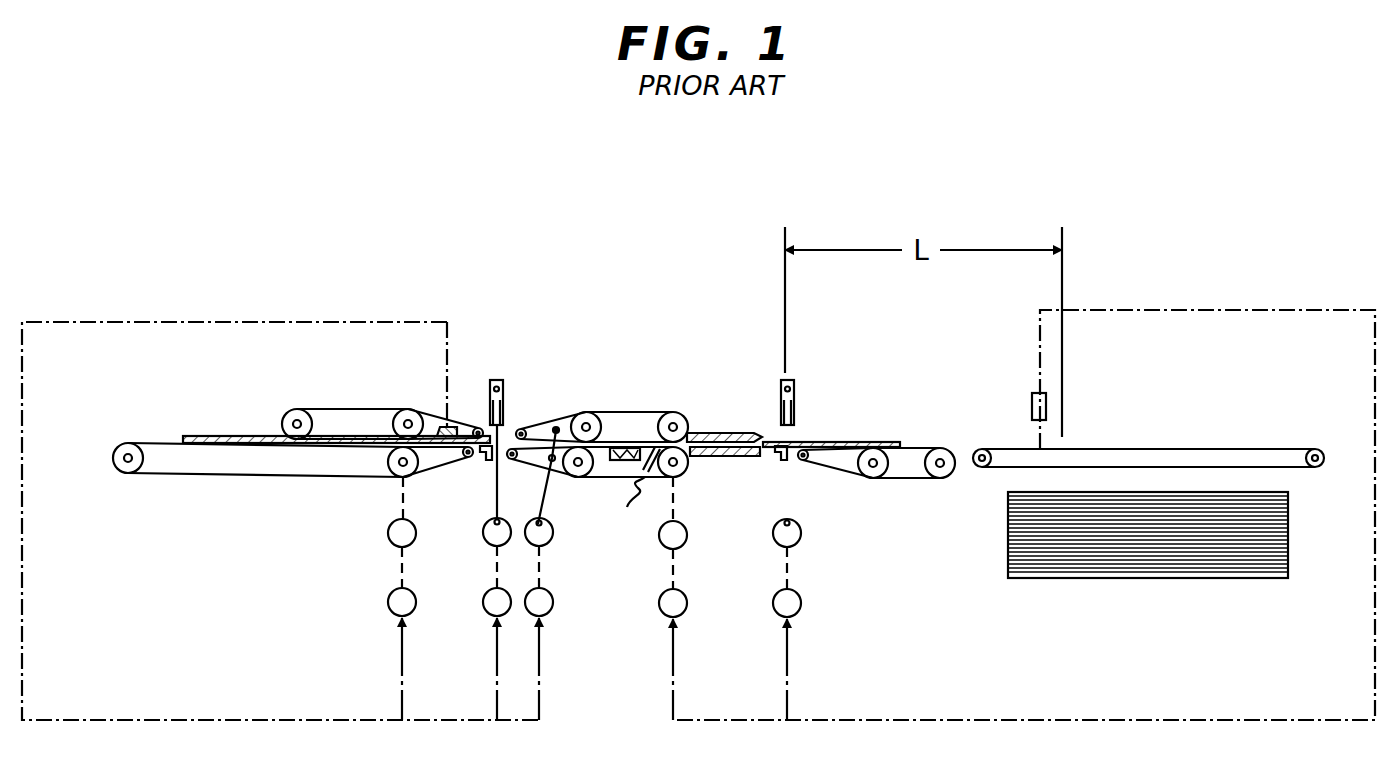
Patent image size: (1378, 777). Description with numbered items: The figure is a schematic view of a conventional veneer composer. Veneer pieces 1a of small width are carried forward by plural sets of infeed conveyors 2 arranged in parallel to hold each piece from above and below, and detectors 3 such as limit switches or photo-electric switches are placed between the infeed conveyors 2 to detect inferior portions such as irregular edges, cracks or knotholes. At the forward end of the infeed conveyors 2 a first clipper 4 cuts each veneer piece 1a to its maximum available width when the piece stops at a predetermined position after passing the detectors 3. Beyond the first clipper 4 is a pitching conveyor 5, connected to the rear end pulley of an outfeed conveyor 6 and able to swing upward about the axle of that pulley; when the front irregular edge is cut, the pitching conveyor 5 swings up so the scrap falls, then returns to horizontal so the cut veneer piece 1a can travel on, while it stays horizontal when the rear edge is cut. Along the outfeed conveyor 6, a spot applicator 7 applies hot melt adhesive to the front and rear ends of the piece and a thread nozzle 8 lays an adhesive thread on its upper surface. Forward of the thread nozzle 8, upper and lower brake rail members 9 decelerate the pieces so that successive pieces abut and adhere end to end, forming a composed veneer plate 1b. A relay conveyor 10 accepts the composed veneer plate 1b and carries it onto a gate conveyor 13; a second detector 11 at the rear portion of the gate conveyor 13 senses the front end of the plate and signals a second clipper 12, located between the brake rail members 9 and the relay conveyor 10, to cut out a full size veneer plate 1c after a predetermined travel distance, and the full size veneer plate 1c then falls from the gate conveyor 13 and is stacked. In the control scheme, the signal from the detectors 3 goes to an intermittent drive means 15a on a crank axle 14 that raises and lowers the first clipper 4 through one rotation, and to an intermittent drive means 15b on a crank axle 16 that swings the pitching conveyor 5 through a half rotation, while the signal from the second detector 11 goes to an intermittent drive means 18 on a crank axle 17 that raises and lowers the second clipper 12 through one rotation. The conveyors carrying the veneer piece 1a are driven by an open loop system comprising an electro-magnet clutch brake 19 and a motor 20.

The veneer piece 1a is at (225, 436).
The composed veneer plate 1b is at (873, 447).
The full size veneer plate 1c is at (1155, 568).
The infeed conveyors 2 is at (393, 465).
The detectors 3 is at (452, 428).
The first clipper 4 is at (499, 380).
The pitching conveyor 5 is at (578, 477).
The outfeed conveyor 6 is at (680, 470).
The spot applicator 7 is at (625, 448).
The thread nozzle 8 is at (652, 445).
The brake rail members 9 is at (726, 433).
The relay conveyor 10 is at (918, 448).
The second detector 11 is at (1046, 407).
The second clipper 12 is at (790, 380).
The gate conveyor 13 is at (1165, 449).
The crank axle 14 is at (487, 543).
The intermittent drive means 15a is at (487, 612).
The intermittent drive means 15b is at (549, 610).
The crank axle 16 is at (549, 540).
The crank axle 17 is at (797, 541).
The intermittent drive means 18 is at (797, 610).
The electro-magnet clutch brake 19 is at (392, 543).
The motor 20 is at (392, 613).